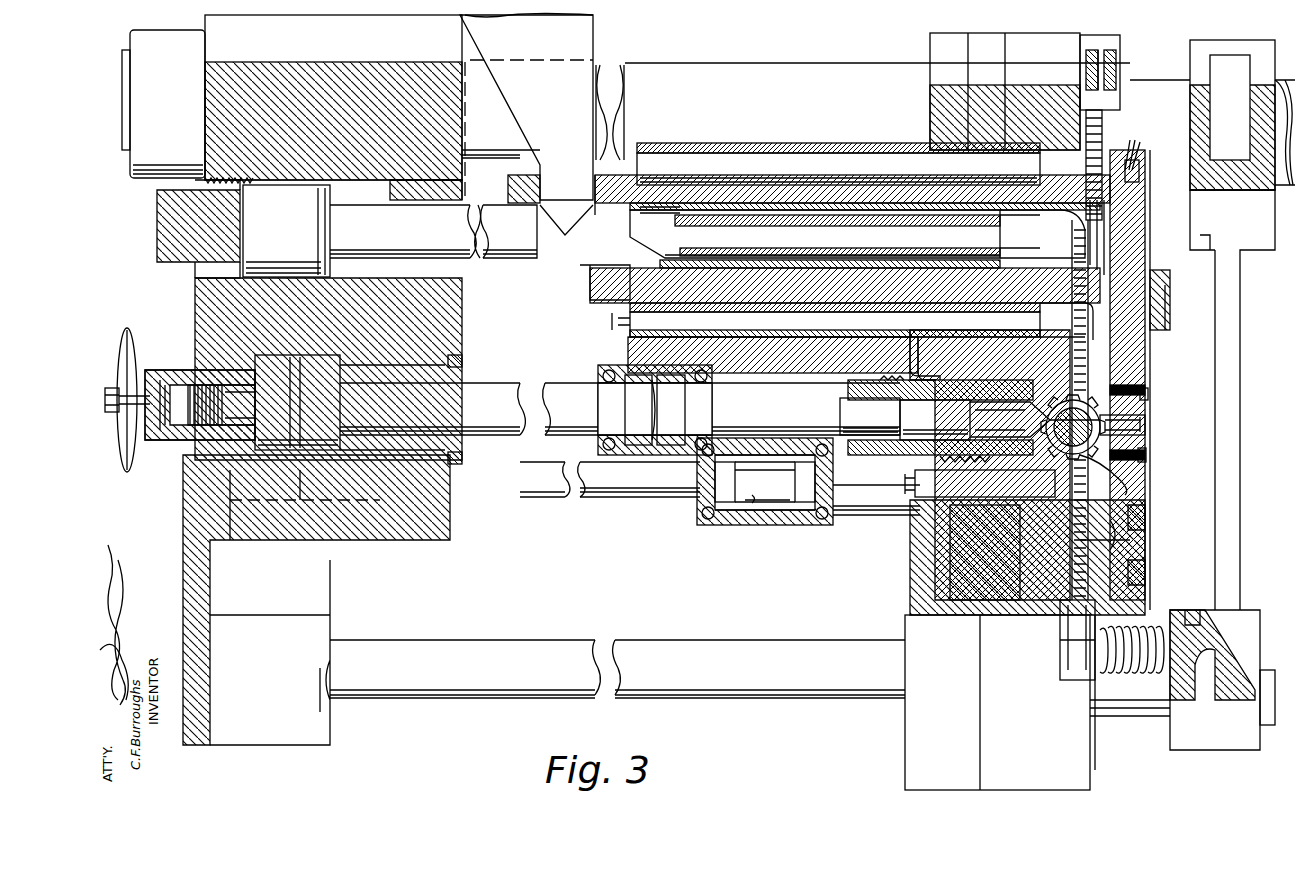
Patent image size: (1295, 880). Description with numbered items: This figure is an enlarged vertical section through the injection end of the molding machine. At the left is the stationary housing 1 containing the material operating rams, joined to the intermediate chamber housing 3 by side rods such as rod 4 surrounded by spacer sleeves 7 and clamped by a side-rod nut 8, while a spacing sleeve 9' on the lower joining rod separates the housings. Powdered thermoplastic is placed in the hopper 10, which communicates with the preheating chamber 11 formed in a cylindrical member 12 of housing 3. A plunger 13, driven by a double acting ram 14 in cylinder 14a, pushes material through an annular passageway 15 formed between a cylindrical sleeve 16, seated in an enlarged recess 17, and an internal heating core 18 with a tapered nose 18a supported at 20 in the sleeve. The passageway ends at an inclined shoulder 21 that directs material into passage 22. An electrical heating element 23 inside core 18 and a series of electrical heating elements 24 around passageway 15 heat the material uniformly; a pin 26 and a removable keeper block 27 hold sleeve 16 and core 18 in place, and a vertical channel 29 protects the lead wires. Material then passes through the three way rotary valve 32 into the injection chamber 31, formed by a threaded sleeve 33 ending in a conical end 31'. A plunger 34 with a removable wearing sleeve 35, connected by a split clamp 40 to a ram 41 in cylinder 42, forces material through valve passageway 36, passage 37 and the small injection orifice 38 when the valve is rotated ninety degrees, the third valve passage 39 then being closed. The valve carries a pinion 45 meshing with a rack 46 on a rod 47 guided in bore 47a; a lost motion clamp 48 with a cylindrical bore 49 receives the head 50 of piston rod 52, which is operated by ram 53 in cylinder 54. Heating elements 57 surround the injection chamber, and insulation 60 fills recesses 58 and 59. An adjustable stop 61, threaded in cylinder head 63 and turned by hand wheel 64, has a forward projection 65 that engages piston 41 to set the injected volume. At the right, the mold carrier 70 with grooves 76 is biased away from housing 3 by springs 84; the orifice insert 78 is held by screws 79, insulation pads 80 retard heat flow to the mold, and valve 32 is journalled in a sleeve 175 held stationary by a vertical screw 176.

The stationary housing 1 is at (196, 20).
The intermediate stationary chamber housing 3 is at (930, 95).
The side rod 4 is at (765, 65).
The sleeve 7 is at (1020, 26).
The side-rod nut 8 is at (152, 33).
The spacing sleeve 9' is at (557, 652).
The hopper 10 is at (590, 40).
The preheating chamber 11 is at (565, 290).
The cylindrical member 12 is at (600, 292).
The plunger 13 is at (520, 242).
The double acting hydraulically operated ram 14 is at (250, 250).
The cylinder 14a is at (215, 285).
The annular space or passageway 15 is at (675, 213).
The cylindrical sleeve 16 is at (726, 200).
The enlarged recess 17 is at (700, 180).
The internal cylindrical heating core 18 is at (690, 222).
The tapered nose 18a is at (690, 238).
The core support 20 is at (1110, 222).
The inclined shoulder 21 is at (990, 240).
The passage 22 is at (1095, 296).
The electrical heating element 23 is at (690, 262).
The electrical heating elements 24 is at (796, 153).
The pin 26 is at (1108, 62).
The keeper block 27 is at (1152, 165).
The vertical channel 29 is at (1170, 310).
The injection chamber 31 is at (925, 399).
The conical end 31' is at (1045, 428).
The three way rotary cylindrical valve 32 is at (1110, 400).
The sleeve 33 is at (878, 380).
The plunger 34 is at (830, 400).
The removable wearing sleeve 35 is at (900, 405).
The valve passageway 36 is at (1146, 452).
The passage 37 is at (1147, 424).
The injection orifice 38 is at (1150, 430).
The third valve passage 39 is at (1009, 421).
The split clamp 40 is at (676, 364).
The double acting ram 41 is at (322, 375).
The cylinder 42 is at (455, 362).
The pinion 45 is at (1130, 458).
The rack 46 is at (1125, 480).
The rod 47 is at (890, 515).
The bore 47a is at (1130, 540).
The lost motion split connecting clamp 48 is at (800, 527).
The cylindrical bore 49 is at (750, 525).
The head 50 is at (725, 478).
The piston rod 52 is at (610, 490).
The double acting ram 53 is at (230, 498).
The cylinder 54 is at (362, 540).
The heating elements 57 is at (905, 484).
The recess 58 is at (1082, 40).
The recess 59 is at (918, 568).
The insulation 60 is at (1030, 95).
The adjustable stop 61 is at (215, 392).
The cylinder head 63 is at (195, 436).
The hand wheel 64 is at (135, 350).
The forward projection 65 is at (245, 398).
The mold carrier 70 is at (1280, 224).
The grooves 76 is at (1210, 240).
The insert 78 is at (1148, 388).
The screws 79 is at (1150, 395).
The insulation pads 80 is at (1145, 518).
The springs 84 is at (1128, 676).
The sleeve 175 is at (1148, 375).
The vertical screw 176 is at (1060, 615).